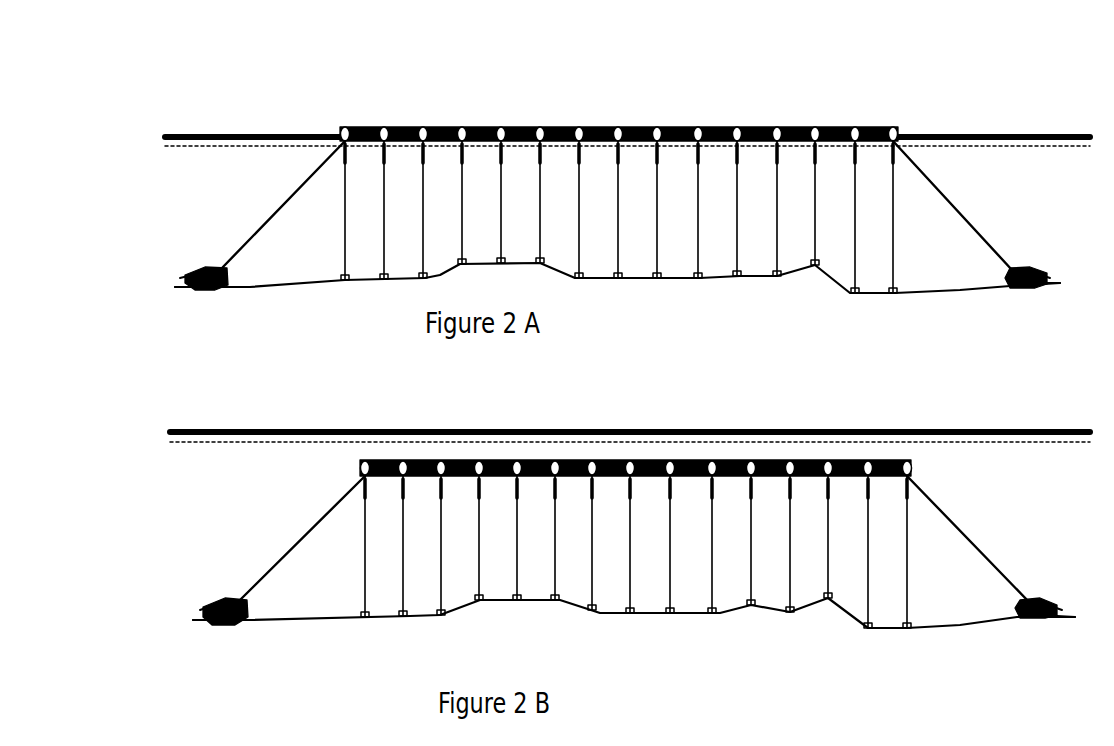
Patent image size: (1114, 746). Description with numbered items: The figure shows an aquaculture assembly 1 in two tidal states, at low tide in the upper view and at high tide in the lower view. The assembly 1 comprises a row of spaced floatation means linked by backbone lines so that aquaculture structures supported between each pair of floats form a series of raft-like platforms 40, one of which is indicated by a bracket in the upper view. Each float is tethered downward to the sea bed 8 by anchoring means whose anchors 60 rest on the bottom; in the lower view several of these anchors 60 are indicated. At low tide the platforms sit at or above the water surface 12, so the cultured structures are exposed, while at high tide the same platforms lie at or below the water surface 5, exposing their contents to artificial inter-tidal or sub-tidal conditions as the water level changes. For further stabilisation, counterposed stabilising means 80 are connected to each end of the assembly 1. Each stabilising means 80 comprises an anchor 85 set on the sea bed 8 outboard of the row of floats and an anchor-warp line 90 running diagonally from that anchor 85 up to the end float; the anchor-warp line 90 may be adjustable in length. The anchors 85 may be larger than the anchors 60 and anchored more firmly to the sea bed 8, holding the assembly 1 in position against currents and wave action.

In FIG. 2B, the aquaculture assembly 1 is at (637, 421).
In FIG. 2B, the water surface at high tide 5 is at (218, 436).
In FIG. 2A, the sea bed 8 is at (258, 355).
In FIG. 2B, the sea bed 8 is at (313, 617).
In FIG. 2A, the water surface at low tide 12 is at (232, 148).
In FIG. 2A, the raft-like platform 40 is at (660, 121).
In FIG. 2B, the anchor 60 is at (787, 614).
In FIG. 2A, the stabilising means 80 is at (942, 372).
In FIG. 2A, the anchor 85 is at (997, 293).
In FIG. 2B, the anchor 85 is at (1055, 602).
In FIG. 2A, the anchor-warp line 90 is at (953, 205).
In FIG. 2B, the anchor-warp line 90 is at (957, 495).